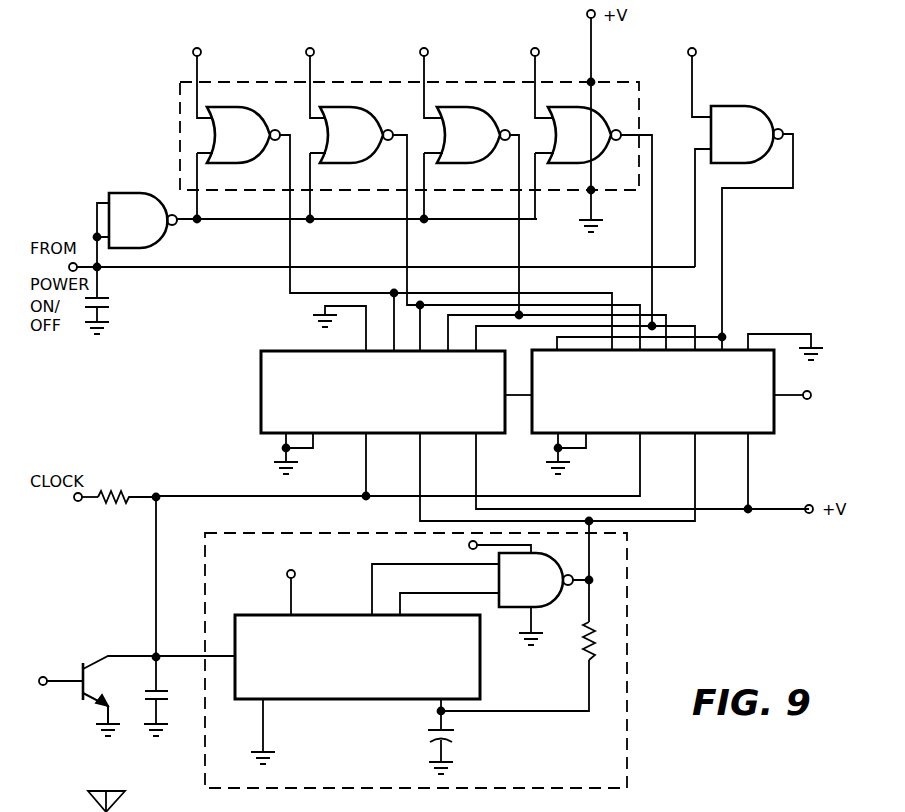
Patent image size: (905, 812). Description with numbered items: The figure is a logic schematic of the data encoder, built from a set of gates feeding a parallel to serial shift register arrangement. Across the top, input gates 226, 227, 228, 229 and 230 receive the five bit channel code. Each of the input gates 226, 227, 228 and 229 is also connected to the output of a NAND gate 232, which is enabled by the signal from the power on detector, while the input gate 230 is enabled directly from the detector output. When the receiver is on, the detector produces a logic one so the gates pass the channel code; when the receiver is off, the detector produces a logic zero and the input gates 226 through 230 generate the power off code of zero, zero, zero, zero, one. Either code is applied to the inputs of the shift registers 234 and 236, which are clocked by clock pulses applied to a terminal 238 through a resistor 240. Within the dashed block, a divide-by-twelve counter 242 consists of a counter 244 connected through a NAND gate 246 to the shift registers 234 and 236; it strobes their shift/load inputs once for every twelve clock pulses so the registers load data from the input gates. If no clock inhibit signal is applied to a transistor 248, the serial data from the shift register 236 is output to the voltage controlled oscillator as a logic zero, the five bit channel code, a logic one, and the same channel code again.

The input gate 226 is at (249, 123).
The input gate 227 is at (377, 104).
The input gate 228 is at (484, 123).
The input gate 229 is at (593, 123).
The input gate 230 is at (760, 126).
The NAND gate 232 is at (136, 203).
The shift register 234 is at (265, 385).
The shift register 236 is at (775, 418).
The terminal 238 is at (78, 504).
The resistor 240 is at (116, 492).
The divide-by-twelve counter 242 is at (627, 642).
The counter 244 is at (398, 700).
The NAND gate 246 is at (545, 590).
The transistor 248 is at (100, 653).